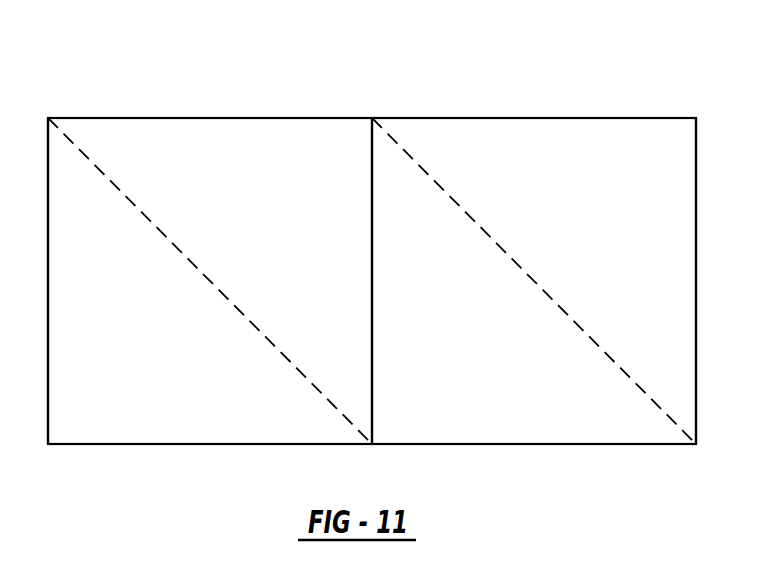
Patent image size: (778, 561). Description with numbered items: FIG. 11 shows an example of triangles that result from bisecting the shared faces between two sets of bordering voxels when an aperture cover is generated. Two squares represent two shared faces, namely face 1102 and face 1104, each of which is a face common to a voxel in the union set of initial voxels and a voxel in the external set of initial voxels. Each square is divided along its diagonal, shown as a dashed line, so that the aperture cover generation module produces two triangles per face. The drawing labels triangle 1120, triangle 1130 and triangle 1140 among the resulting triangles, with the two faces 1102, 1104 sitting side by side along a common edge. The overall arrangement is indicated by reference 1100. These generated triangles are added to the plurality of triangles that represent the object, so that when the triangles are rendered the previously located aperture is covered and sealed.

The optical structure 1100 is at (607, 147).
The face 1102 is at (460, 68).
The face 1104 is at (158, 88).
The triangle 1120 is at (488, 392).
The triangle 1130 is at (247, 135).
The triangle 1140 is at (174, 392).